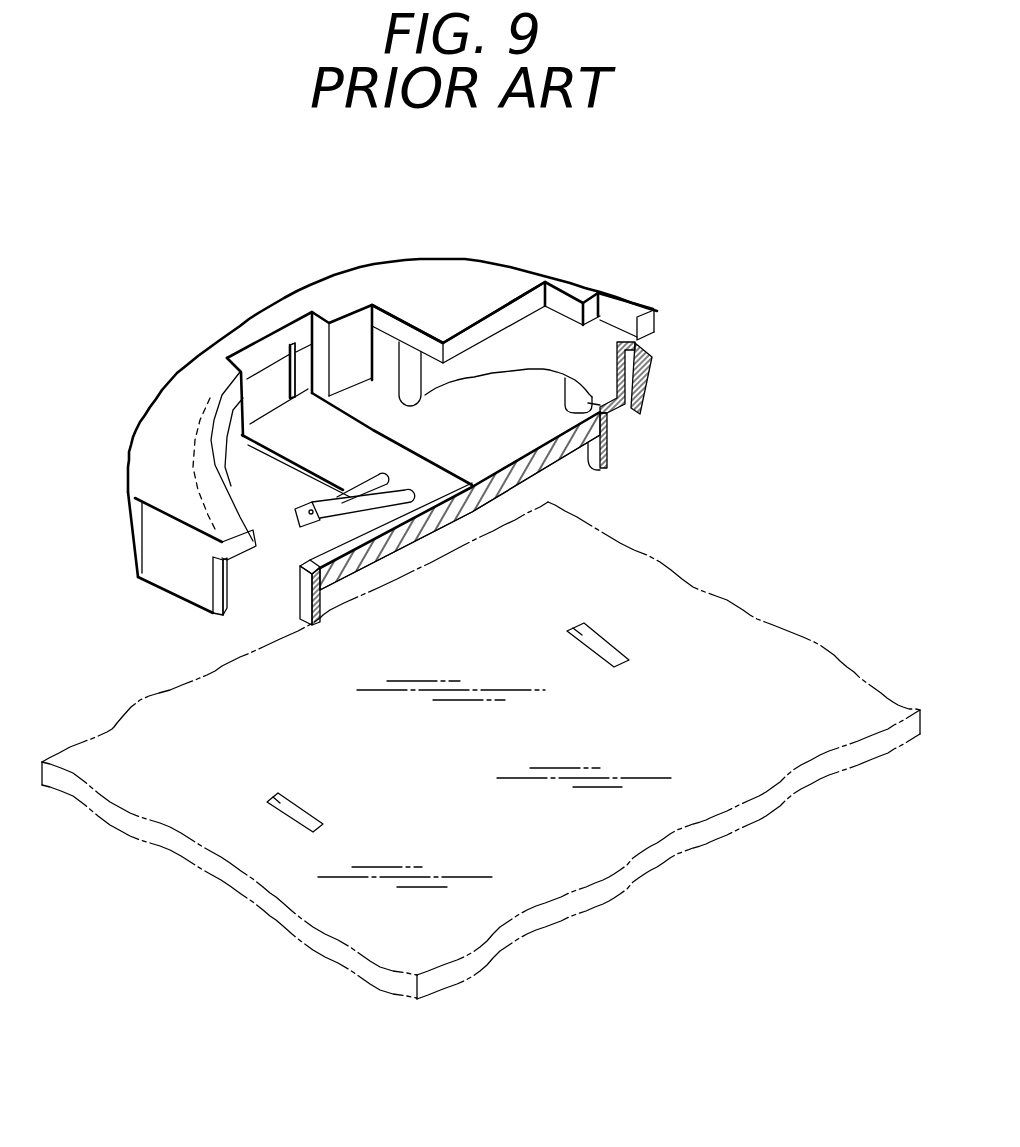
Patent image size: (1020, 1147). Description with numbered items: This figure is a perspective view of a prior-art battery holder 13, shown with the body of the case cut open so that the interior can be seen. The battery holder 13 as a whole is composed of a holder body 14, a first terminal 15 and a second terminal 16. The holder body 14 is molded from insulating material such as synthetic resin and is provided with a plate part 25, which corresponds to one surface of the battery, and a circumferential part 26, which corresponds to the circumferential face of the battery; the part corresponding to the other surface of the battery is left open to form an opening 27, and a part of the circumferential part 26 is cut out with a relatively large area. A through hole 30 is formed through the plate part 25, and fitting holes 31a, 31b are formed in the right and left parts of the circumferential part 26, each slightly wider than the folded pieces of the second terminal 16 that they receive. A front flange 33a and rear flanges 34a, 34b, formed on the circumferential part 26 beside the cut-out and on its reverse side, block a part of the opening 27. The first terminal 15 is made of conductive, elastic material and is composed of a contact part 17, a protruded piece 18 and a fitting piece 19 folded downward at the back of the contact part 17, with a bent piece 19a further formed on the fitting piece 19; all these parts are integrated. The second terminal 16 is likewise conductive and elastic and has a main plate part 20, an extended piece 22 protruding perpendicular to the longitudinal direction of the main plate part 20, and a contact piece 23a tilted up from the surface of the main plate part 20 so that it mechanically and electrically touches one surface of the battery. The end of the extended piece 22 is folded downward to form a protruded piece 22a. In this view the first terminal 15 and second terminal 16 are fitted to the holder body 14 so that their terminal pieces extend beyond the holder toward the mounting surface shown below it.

The battery holder 13 is at (353, 278).
The holder body 14 is at (157, 402).
The first terminal 15 is at (548, 480).
The second terminal 16 is at (455, 500).
The contact part 17 is at (518, 353).
The protruded piece 18 is at (607, 453).
The fitting piece 19 is at (613, 327).
The bent piece 19a is at (652, 353).
The main plate part 20 is at (370, 440).
The extended piece 22 is at (380, 560).
The protruded piece 22a is at (308, 627).
The contact piece 23a is at (305, 503).
The plate part 25 is at (412, 540).
The circumferential part 26 is at (127, 513).
The opening 27 is at (232, 402).
The through hole 30 is at (570, 377).
The fitting hole 31a is at (261, 369).
The fitting hole 31b is at (292, 370).
The front flange 33a is at (230, 553).
The rear flange 34a is at (490, 330).
The rear flange 34b is at (458, 312).